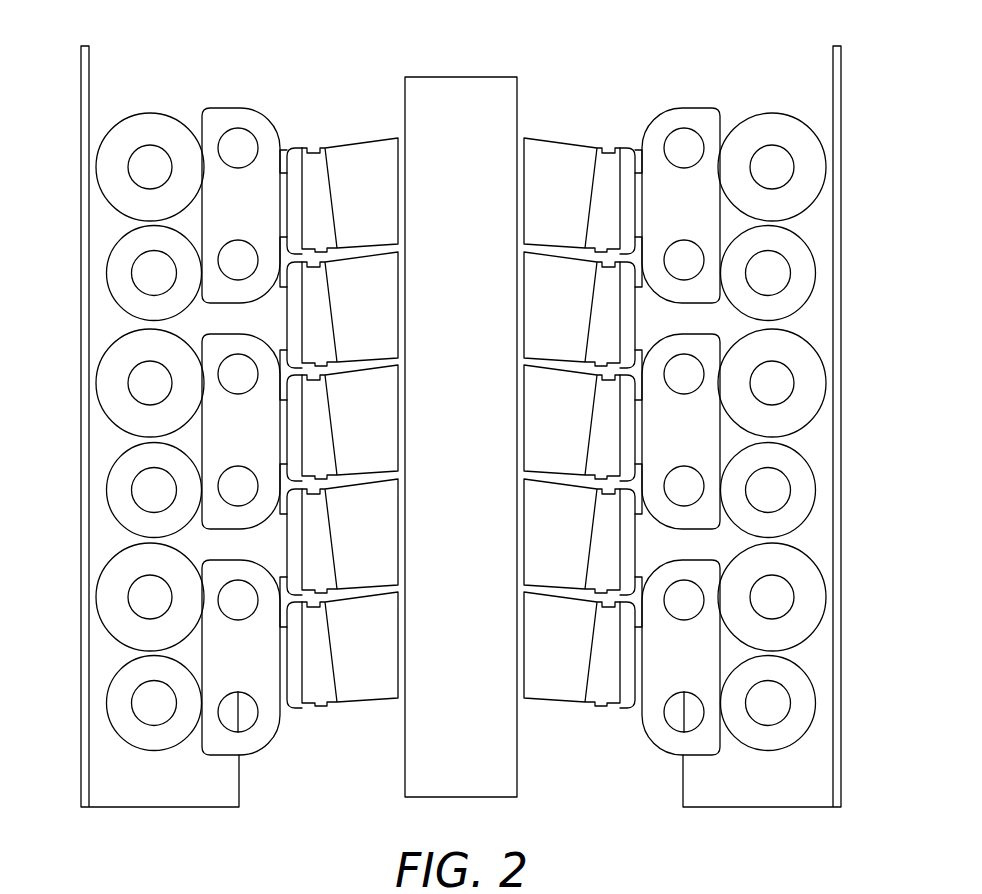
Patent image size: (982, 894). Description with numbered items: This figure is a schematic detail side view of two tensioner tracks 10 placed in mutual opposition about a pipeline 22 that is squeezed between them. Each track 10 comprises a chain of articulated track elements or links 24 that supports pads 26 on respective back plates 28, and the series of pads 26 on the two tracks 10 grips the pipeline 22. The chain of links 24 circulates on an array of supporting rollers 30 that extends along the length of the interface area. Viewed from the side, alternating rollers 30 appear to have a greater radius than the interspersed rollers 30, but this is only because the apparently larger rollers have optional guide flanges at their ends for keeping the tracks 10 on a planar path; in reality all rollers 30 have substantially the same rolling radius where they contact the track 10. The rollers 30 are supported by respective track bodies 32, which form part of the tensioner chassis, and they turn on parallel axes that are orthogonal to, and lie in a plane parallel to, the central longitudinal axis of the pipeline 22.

The tensioner track 10 is at (464, 412).
The pipeline 22 is at (460, 87).
The track element 24 is at (665, 123).
The pad 26 is at (560, 156).
The back plate 28 is at (290, 157).
The supporting roller 30 is at (107, 167).
The track body 32 is at (81, 792).